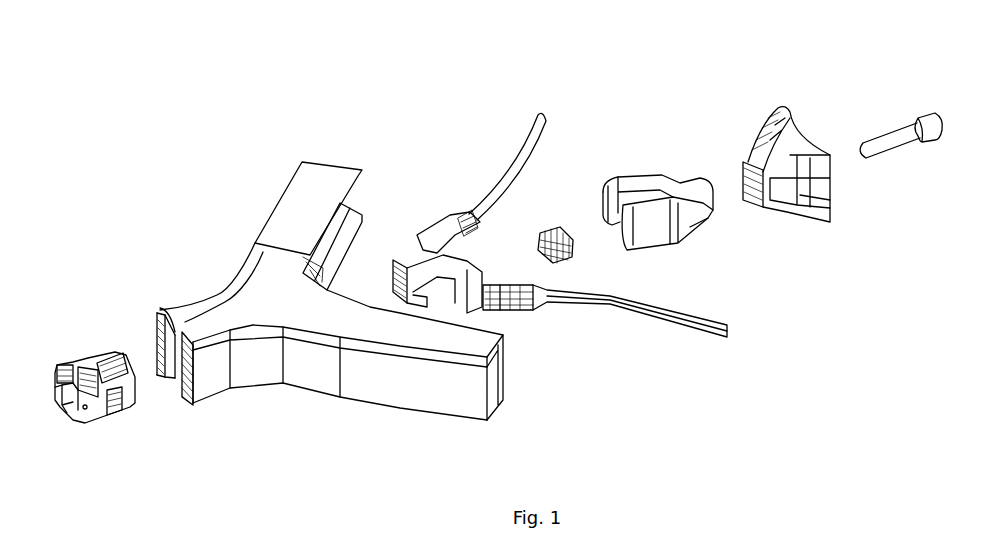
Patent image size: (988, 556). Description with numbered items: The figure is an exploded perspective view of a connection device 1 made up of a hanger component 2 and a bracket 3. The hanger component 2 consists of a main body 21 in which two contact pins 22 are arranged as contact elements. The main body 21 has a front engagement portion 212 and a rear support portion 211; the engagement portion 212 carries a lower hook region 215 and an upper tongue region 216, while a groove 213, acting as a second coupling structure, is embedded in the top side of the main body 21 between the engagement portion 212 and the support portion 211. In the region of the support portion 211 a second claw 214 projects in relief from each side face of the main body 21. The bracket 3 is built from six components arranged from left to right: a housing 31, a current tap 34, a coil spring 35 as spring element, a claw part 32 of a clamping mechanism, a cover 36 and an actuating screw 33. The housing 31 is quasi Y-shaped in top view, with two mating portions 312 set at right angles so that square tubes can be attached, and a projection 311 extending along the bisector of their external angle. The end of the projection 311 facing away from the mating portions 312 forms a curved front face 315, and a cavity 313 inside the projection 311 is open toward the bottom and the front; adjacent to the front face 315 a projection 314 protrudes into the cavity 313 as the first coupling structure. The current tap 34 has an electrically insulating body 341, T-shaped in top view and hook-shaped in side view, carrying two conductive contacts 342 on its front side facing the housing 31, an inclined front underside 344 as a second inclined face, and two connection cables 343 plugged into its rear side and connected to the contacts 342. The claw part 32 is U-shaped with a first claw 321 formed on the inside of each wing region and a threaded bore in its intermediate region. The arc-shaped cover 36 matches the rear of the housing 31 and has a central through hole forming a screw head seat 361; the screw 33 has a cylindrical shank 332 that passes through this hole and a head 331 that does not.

The connection device 1 is at (260, 97).
The hanger component 2 is at (115, 441).
The bracket 3 is at (330, 115).
The main body 21 is at (102, 338).
The contact pins 22 is at (62, 397).
The support portion 211 is at (122, 363).
The engagement portion 212 is at (58, 352).
The groove 213 is at (87, 362).
The second claw 214 is at (125, 400).
The hook region 215 is at (82, 400).
The tongue region 216 is at (73, 367).
The housing 31 is at (288, 407).
The projection 311 is at (195, 307).
The mating portions 312 is at (422, 390).
The cavity 313 is at (175, 363).
The projection 314 is at (173, 330).
The front face 315 is at (168, 335).
The claw part 32 is at (655, 160).
The first claw 321 is at (614, 210).
The actuating screw 33 is at (895, 168).
The head 331 is at (924, 117).
The shank 332 is at (878, 140).
The current tap 34 is at (428, 203).
The body 341 is at (440, 230).
The contacts 342 is at (401, 300).
The connection cables 343 is at (527, 300).
The front underside 344 is at (408, 300).
The coil spring 35 is at (550, 230).
The cover 36 is at (793, 240).
The screw head seat 361 is at (755, 180).